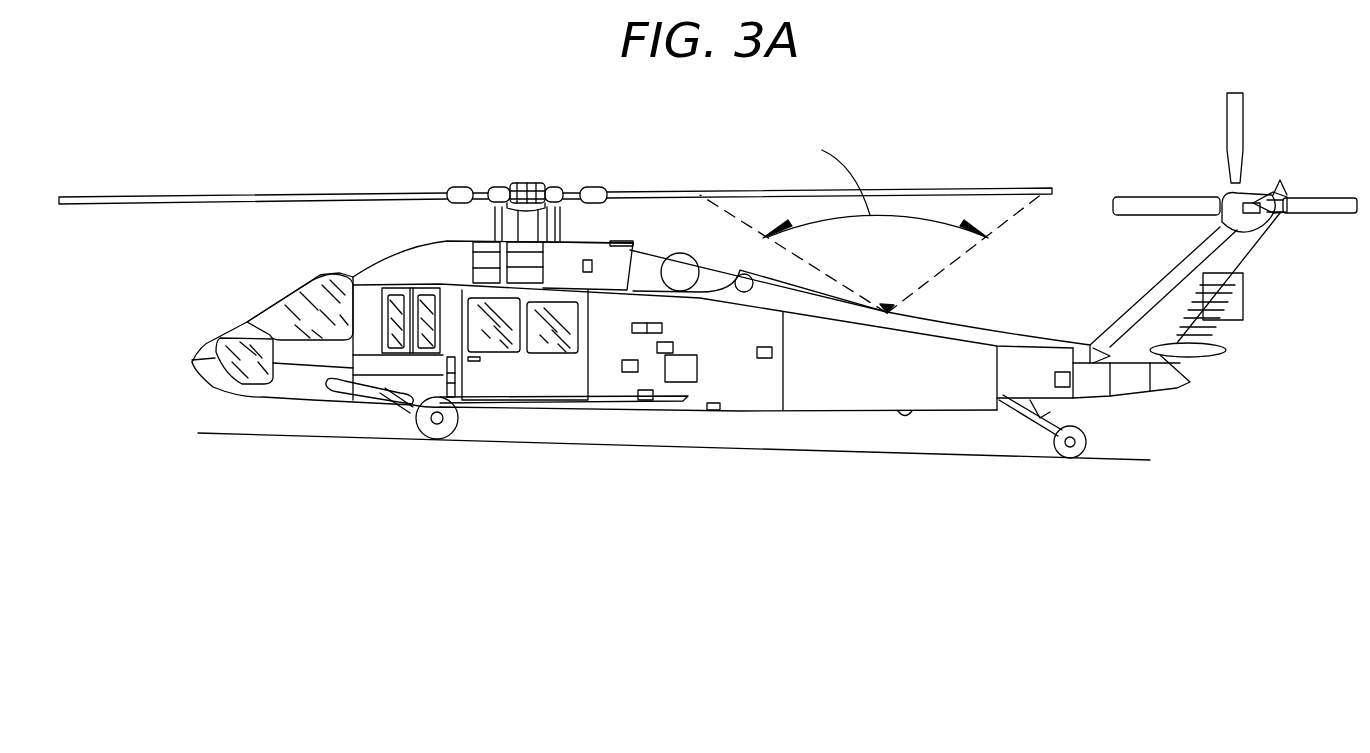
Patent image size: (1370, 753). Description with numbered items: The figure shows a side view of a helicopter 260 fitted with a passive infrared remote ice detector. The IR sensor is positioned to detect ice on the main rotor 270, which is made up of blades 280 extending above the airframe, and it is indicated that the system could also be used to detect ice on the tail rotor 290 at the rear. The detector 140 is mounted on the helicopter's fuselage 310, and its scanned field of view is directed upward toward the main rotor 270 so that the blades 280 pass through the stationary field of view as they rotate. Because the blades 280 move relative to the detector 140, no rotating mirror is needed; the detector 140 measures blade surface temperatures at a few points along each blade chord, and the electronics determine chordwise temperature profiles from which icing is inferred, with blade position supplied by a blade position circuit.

The IR detector 140 is at (887, 313).
The helicopter 260 is at (372, 470).
The main rotor 270 is at (555, 160).
The blades 280 is at (130, 196).
The tail rotor 290 is at (1247, 117).
The fuselage 310 is at (903, 383).